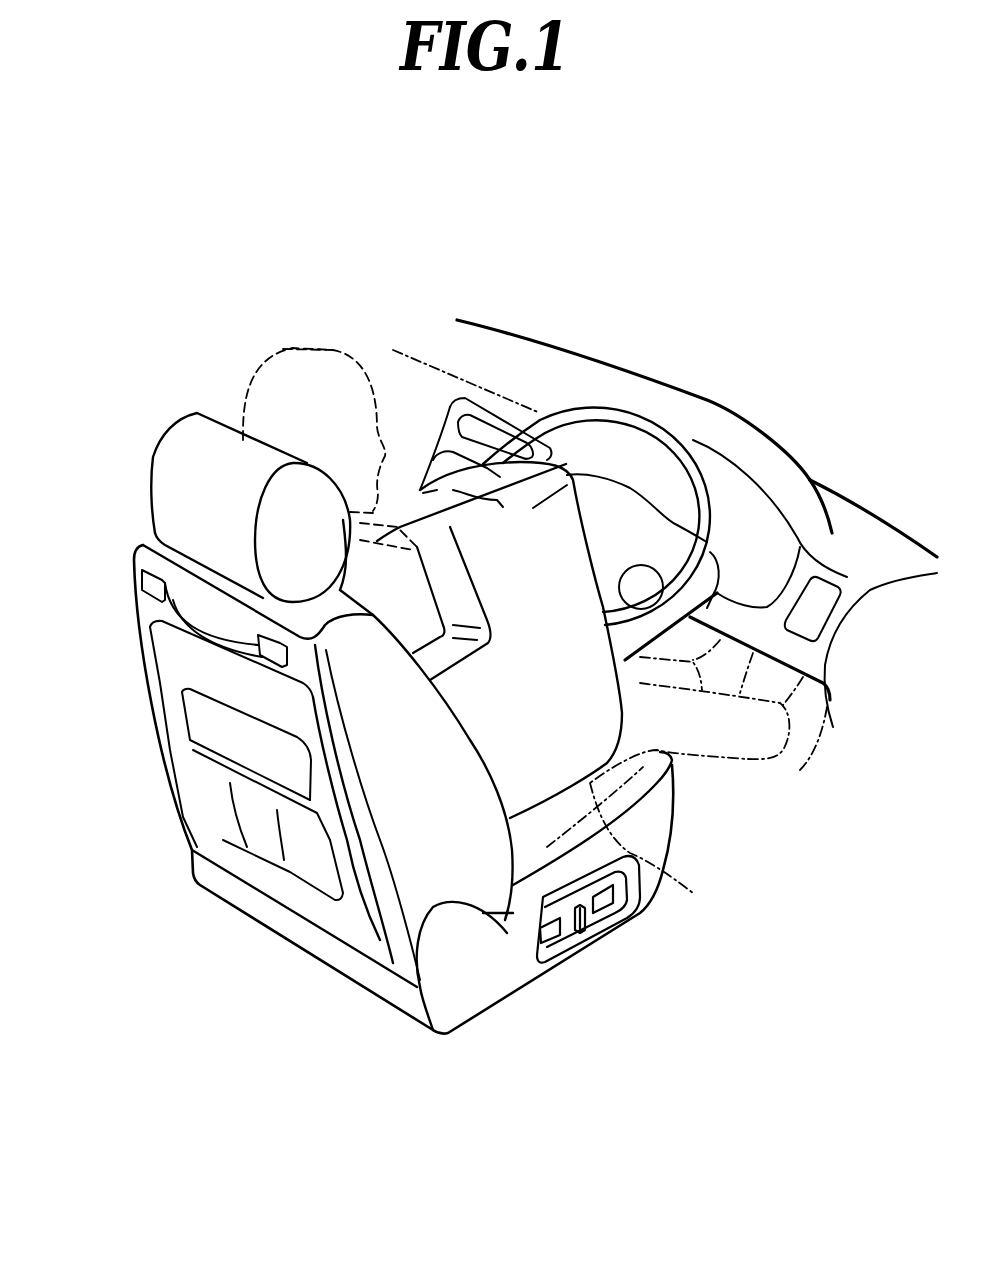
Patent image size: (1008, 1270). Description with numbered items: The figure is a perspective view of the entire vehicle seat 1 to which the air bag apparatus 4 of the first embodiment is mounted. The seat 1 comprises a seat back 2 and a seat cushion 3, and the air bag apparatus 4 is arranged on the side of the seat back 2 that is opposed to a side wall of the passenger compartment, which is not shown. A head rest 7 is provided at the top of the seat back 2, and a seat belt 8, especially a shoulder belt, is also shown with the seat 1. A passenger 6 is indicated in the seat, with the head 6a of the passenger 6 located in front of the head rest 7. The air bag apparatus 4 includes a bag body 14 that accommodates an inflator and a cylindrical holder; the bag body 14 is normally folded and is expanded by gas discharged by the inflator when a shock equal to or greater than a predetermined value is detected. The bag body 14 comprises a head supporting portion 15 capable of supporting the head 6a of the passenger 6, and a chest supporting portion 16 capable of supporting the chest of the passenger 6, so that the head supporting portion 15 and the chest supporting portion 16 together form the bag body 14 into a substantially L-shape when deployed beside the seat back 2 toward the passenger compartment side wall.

The seat 1 is at (178, 853).
The seat back 2 is at (410, 890).
The seat cushion 3 is at (512, 980).
The air bag apparatus 4 is at (693, 893).
The passenger 6 is at (282, 350).
The head 6a is at (310, 347).
The head rest 7 is at (203, 467).
The seat belt 8 is at (418, 510).
The bag body 14 is at (580, 253).
The head supporting portion 15 is at (580, 476).
The chest supporting portion 16 is at (553, 723).